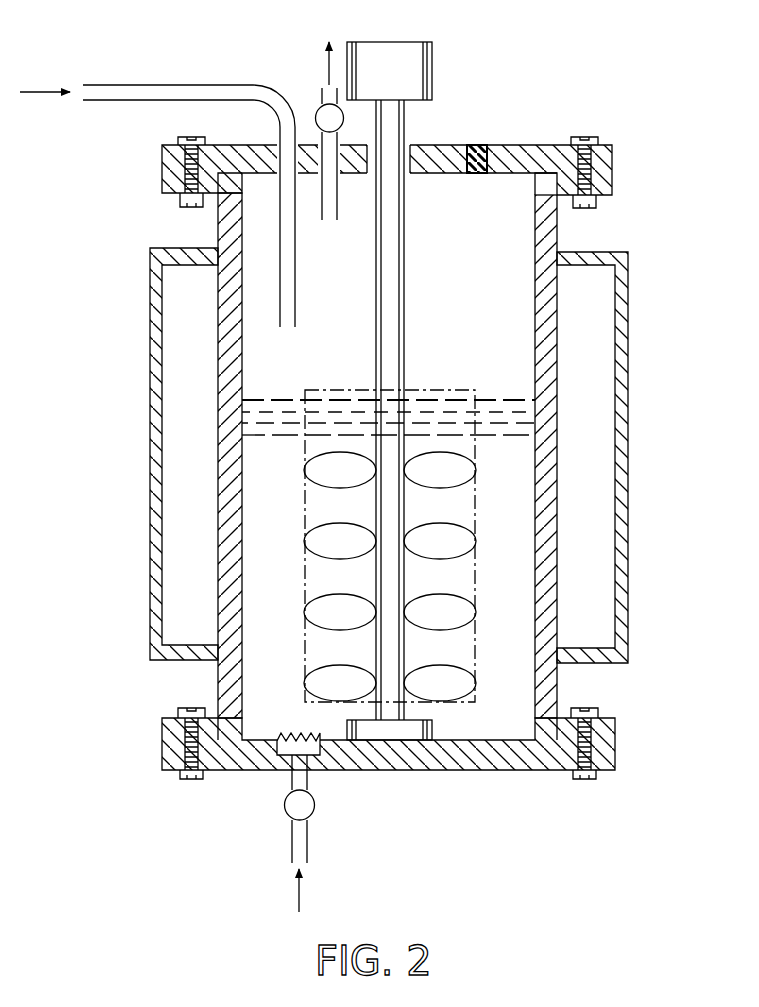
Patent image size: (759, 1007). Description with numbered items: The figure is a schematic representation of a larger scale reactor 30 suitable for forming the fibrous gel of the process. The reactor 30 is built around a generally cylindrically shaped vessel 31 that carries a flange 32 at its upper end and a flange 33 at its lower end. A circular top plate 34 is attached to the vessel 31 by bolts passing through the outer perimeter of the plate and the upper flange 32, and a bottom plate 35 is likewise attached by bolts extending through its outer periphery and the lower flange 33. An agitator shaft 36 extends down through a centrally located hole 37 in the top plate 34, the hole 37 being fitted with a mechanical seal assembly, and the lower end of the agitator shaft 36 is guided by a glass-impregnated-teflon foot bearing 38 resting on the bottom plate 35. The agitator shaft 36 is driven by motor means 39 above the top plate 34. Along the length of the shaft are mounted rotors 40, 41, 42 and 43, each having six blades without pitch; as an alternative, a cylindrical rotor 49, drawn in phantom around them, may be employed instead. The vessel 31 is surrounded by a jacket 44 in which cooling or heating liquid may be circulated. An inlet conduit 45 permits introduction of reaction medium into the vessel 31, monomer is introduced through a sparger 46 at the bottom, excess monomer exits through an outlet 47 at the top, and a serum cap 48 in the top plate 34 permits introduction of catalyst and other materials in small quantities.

The reactor 30 is at (644, 280).
The vessel 31 is at (551, 506).
The flange 32 is at (587, 180).
The flange 33 is at (586, 727).
The top plate 34 is at (546, 150).
The bottom plate 35 is at (440, 772).
The agitator shaft 36 is at (393, 310).
The hole 37 is at (407, 152).
The foot bearing 38 is at (433, 729).
The motor means 39 is at (425, 66).
The rotor 40 is at (476, 469).
The rotor 41 is at (474, 540).
The rotor 42 is at (474, 610).
The rotor 43 is at (474, 681).
The jacket 44 is at (150, 418).
The inlet conduit 45 is at (173, 85).
The sparger 46 is at (310, 780).
The outlet 47 is at (320, 128).
The serum cap 48 is at (479, 145).
The cylindrical rotor 49 is at (450, 390).